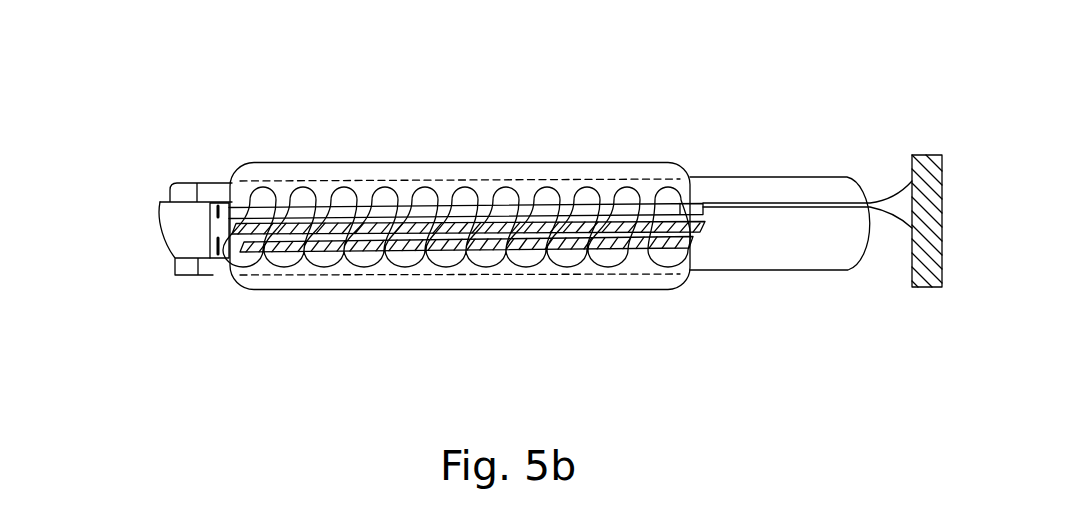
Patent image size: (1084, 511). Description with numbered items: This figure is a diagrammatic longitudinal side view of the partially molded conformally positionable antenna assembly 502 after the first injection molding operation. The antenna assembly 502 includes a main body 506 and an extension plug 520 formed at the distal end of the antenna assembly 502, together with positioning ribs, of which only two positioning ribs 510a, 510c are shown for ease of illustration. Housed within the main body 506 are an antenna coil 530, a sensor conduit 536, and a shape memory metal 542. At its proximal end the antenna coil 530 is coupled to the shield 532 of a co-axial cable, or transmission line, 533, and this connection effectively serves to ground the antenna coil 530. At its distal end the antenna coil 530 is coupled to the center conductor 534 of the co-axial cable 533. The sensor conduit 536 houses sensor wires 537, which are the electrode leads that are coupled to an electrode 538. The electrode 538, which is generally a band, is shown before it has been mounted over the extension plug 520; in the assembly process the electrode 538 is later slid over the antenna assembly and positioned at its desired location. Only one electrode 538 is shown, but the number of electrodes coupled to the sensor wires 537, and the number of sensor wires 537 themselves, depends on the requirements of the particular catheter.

The antenna assembly 502 is at (822, 101).
The main body 506 is at (608, 180).
The positioning rib 510a is at (481, 166).
The positioning rib 510c is at (517, 287).
The antenna coil 530 is at (267, 185).
The sensor conduit 536 is at (358, 205).
The center conductor 534 is at (705, 218).
The shape memory metal 542 is at (607, 250).
The co-axial cable 533 is at (173, 218).
The shield 532 is at (217, 257).
The extension plug 520 is at (795, 262).
The sensor wires 537 is at (905, 222).
The electrode 538 is at (930, 287).